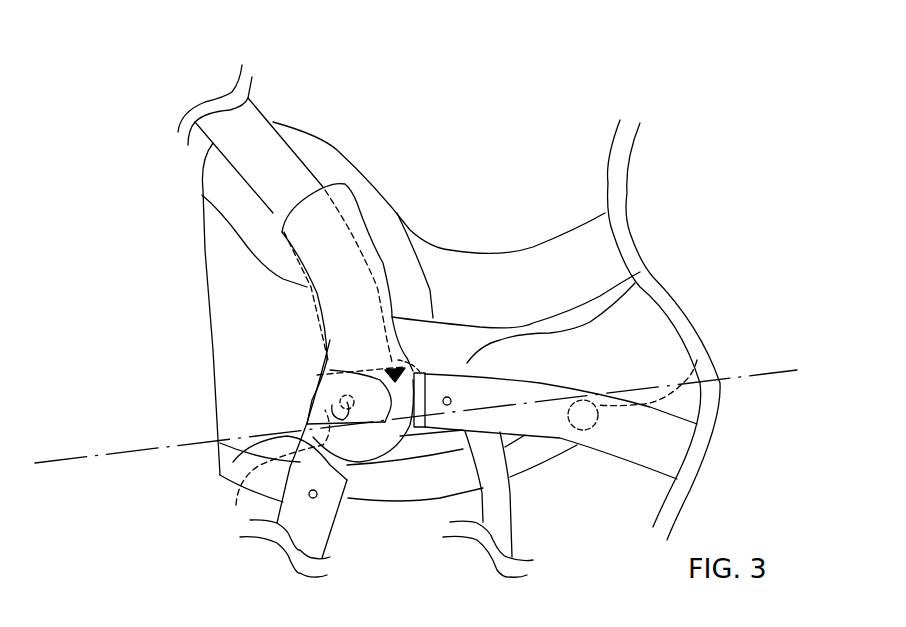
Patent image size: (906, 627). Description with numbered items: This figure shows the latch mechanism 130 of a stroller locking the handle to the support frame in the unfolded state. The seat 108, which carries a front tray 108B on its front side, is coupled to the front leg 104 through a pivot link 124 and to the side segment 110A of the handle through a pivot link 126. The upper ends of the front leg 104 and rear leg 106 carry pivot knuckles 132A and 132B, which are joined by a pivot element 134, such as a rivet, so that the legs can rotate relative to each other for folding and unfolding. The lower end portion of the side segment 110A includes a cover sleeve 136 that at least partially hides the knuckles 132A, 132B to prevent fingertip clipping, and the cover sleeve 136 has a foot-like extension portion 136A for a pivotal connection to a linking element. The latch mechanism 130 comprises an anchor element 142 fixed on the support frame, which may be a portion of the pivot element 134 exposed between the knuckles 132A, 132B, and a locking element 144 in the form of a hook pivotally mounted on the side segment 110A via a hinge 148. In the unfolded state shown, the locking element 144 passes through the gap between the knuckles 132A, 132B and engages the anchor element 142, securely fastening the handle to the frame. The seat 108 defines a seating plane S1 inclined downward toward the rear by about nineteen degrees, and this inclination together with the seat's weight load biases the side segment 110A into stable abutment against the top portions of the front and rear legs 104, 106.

The side segment 110A is at (256, 130).
The pivot link 126 is at (308, 222).
The latch mechanism 130 is at (420, 370).
The seat 108 is at (513, 270).
The foot-like extension portion 136A is at (613, 300).
The pivot link 124 is at (703, 340).
The hinge 148 is at (350, 357).
The cover sleeve 136 is at (327, 380).
The seating plane S1 is at (68, 458).
The anchor element 142 is at (322, 392).
The pivot knuckle 132B is at (220, 468).
The pivot element 134 is at (245, 500).
The locking element 144 is at (368, 438).
The pivot knuckle 132A is at (400, 448).
The front leg 104 is at (557, 430).
The front tray 108B is at (503, 527).
The rear leg 106 is at (323, 540).